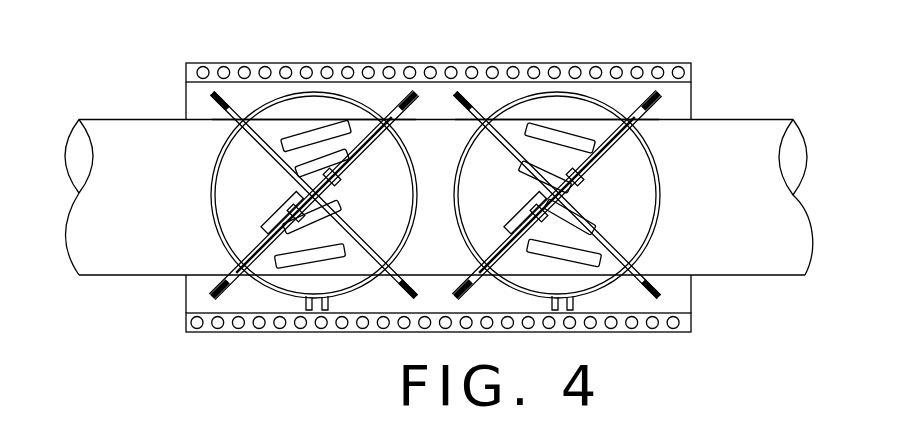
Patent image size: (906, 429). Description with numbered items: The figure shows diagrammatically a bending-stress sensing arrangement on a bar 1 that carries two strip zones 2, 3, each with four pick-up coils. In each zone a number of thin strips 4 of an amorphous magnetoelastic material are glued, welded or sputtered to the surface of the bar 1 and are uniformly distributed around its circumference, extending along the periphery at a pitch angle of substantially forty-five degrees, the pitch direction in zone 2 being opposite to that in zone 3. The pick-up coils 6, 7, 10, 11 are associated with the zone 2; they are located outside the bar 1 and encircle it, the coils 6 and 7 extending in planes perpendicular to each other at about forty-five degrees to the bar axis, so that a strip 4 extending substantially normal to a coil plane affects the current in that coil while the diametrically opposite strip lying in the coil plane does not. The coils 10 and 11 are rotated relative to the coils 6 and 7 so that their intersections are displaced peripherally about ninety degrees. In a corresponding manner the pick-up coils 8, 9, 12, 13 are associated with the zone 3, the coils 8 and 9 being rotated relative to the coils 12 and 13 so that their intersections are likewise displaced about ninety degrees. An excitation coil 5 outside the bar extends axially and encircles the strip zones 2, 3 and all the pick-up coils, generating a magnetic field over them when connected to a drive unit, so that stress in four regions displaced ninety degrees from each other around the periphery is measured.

The bar 1 is at (767, 147).
The strip zone 2 is at (562, 119).
The strip zone 3 is at (313, 121).
The strips 4 is at (283, 210).
The excitation coil 5 is at (678, 83).
The pick-up coil 6 is at (640, 127).
The pick-up coil 7 is at (477, 120).
The pick-up coil 8 is at (388, 120).
The pick-up coil 9 is at (233, 117).
The pick-up coil 10 is at (652, 152).
The pick-up coil 11 is at (467, 157).
The pick-up coil 12 is at (410, 157).
The pick-up coil 13 is at (220, 167).